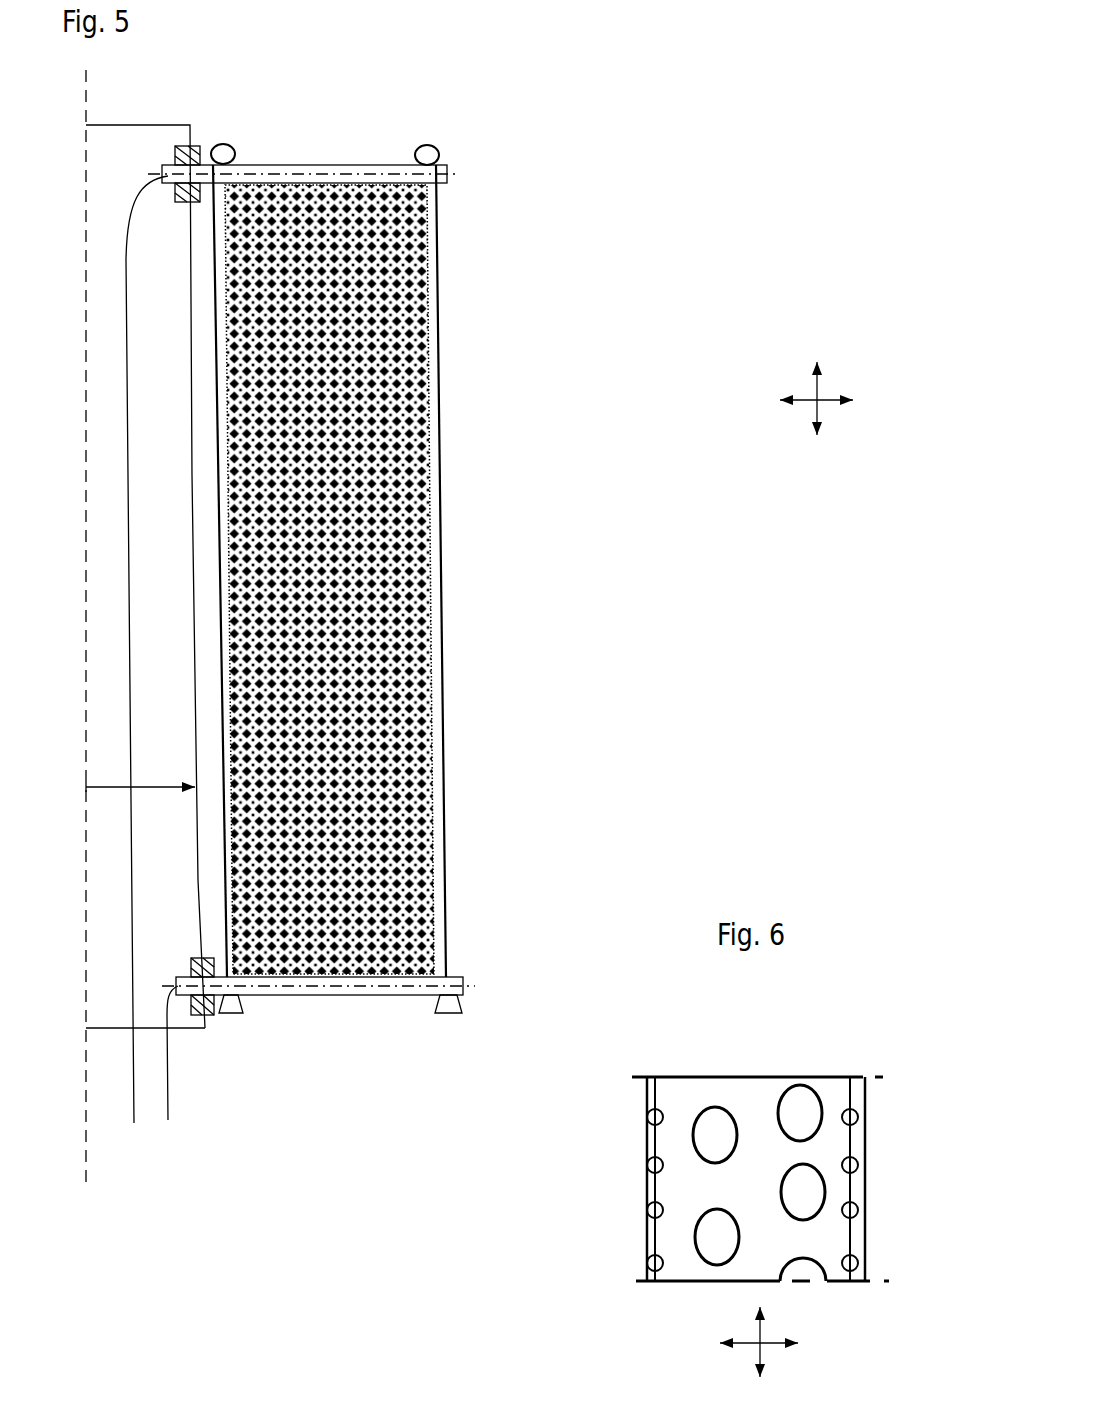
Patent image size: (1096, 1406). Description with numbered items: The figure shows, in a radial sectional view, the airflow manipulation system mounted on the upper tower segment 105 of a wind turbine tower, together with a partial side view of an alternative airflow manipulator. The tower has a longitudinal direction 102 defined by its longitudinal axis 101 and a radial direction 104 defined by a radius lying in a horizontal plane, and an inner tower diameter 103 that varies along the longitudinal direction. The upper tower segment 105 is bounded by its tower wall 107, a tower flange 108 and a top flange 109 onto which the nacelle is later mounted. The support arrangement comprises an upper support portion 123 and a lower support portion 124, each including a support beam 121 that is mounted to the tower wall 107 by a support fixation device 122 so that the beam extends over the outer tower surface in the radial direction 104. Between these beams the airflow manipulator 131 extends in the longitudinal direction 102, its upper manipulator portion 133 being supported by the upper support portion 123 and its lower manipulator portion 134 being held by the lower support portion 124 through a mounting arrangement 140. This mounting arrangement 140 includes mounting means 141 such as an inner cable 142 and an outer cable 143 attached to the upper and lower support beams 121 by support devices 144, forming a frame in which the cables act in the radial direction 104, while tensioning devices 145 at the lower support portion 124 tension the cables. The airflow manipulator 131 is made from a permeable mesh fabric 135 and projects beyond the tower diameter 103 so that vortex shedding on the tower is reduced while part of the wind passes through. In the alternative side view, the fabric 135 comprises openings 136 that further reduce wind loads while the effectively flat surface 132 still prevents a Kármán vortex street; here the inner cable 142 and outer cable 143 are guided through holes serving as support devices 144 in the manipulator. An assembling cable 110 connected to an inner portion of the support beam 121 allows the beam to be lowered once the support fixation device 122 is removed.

In FIG. 5, the longitudinal axis 101 is at (88, 1165).
In FIG. 5, the longitudinal direction 102 is at (822, 407).
In FIG. 6, the longitudinal direction 102 is at (765, 1350).
In FIG. 5, the tower diameter 103 is at (108, 787).
In FIG. 5, the radial direction 104 is at (827, 392).
In FIG. 6, the radial direction 104 is at (765, 1338).
In FIG. 5, the upper tower segment 105 is at (178, 628).
In FIG. 5, the tower wall 107 is at (192, 475).
In FIG. 5, the tower flange 108 is at (110, 1028).
In FIG. 5, the top flange 109 is at (128, 125).
In FIG. 5, the assembling cable 110 is at (125, 566).
In FIG. 5, the support beam 121 is at (317, 165).
In FIG. 5, the support fixation device 122 is at (195, 117).
In FIG. 5, the upper support portion 123 is at (470, 165).
In FIG. 5, the lower support portion 124 is at (488, 972).
In FIG. 5, the airflow manipulator 131 is at (393, 607).
In FIG. 6, the airflow manipulator 131 is at (788, 1060).
In FIG. 6, the effectively flat surface 132 is at (745, 1206).
In FIG. 5, the upper manipulator portion 133 is at (462, 222).
In FIG. 5, the lower manipulator portion 134 is at (475, 923).
In FIG. 5, the fabric 135 is at (415, 425).
In FIG. 6, the fabric 135 is at (828, 1090).
In FIG. 6, the opening 136 is at (720, 1240).
In FIG. 5, the mounting arrangement 140 is at (577, 200).
In FIG. 5, the mounting means 141 is at (550, 293).
In FIG. 5, the inner cable 142 is at (218, 693).
In FIG. 6, the inner cable 142 is at (647, 1187).
In FIG. 5, the outer cable 143 is at (442, 508).
In FIG. 6, the outer cable 143 is at (853, 1188).
In FIG. 5, the support device 144 is at (233, 140).
In FIG. 6, the support device 144 is at (650, 1115).
In FIG. 5, the tensioning device 145 is at (240, 1017).